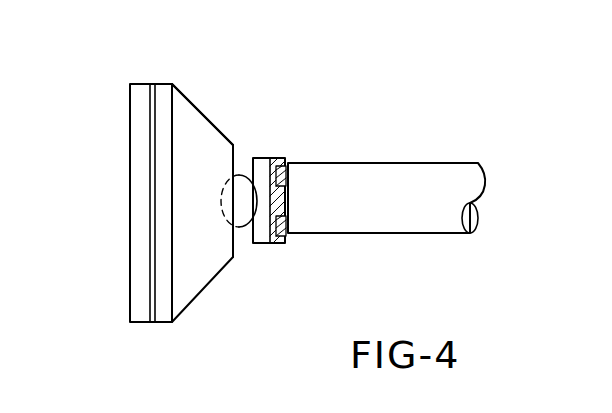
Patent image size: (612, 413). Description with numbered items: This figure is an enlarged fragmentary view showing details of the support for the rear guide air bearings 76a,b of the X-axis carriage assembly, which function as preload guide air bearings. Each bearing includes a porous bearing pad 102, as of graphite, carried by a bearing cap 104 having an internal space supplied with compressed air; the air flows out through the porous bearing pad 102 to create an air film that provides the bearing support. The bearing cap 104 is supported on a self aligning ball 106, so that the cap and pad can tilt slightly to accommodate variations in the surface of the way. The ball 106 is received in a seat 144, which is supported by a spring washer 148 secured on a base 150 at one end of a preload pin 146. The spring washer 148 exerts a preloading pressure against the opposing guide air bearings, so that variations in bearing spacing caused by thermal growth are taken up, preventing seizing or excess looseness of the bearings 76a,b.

The porous bearing pad 102 is at (137, 80).
The rear guide air bearings 76a,b is at (210, 52).
The bearing cap 104 is at (193, 104).
The ball 106 is at (237, 150).
The base 150 is at (271, 158).
The seat 144 is at (254, 249).
The spring washer 148 is at (287, 244).
The preload pin 146 is at (437, 119).